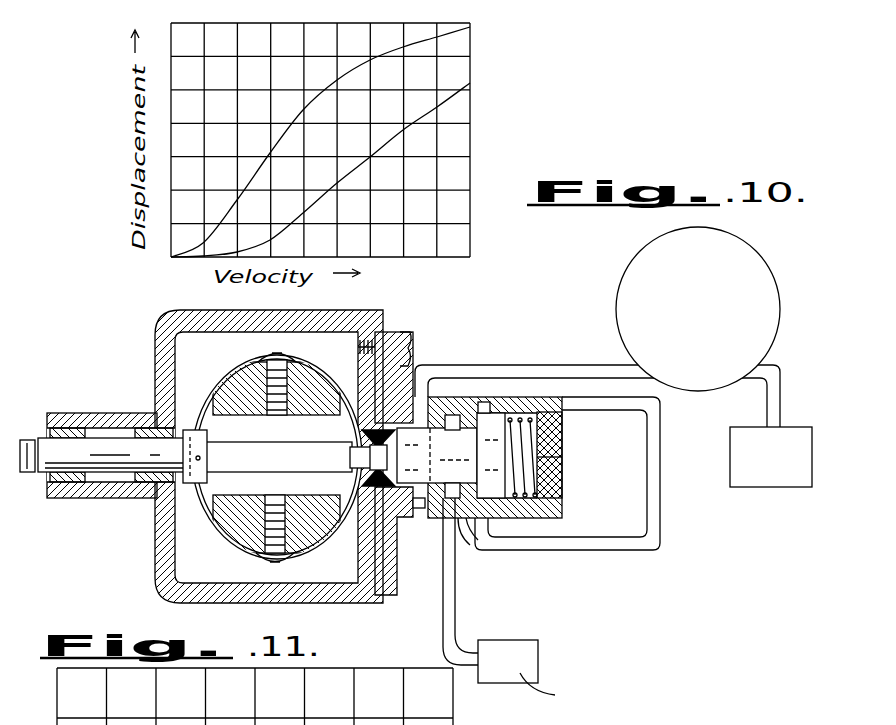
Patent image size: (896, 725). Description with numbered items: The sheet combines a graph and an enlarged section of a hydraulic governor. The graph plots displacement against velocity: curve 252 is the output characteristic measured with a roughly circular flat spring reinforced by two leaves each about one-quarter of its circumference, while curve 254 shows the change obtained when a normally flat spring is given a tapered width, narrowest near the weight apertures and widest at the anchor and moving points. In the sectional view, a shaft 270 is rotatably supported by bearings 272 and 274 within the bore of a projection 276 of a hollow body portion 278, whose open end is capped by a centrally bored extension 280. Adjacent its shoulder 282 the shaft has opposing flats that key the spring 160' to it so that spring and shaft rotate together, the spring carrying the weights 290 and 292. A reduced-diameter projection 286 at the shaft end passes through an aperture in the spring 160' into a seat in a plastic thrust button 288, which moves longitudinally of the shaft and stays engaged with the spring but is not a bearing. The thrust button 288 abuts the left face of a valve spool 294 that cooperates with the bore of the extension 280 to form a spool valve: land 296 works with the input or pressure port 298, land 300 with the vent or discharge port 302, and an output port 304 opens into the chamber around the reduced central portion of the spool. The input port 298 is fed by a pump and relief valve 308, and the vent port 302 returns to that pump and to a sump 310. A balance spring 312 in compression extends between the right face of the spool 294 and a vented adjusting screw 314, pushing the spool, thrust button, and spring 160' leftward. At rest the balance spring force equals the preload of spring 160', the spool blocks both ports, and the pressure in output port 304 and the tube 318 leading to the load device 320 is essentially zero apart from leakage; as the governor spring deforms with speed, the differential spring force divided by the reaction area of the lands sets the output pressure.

In FIG. 10, the curve 252 is at (352, 175).
In FIG. 10, the curve 254 is at (312, 105).
In FIG. 11, the spring 160' is at (272, 450).
In FIG. 11, the shaft 270 is at (63, 447).
In FIG. 11, the bearing 272 is at (68, 482).
In FIG. 11, the bearing 274 is at (148, 482).
In FIG. 11, the projection 276 is at (95, 487).
In FIG. 11, the hollow body portion 278 is at (297, 318).
In FIG. 11, the extension 280 is at (387, 380).
In FIG. 11, the shoulder 282 is at (188, 468).
In FIG. 11, the reduced-diameter projection 286 is at (367, 458).
In FIG. 11, the thrust button 288 is at (343, 528).
In FIG. 11, the weight 290 is at (333, 358).
In FIG. 11, the weight 292 is at (248, 533).
In FIG. 11, the valve spool 294 is at (463, 520).
In FIG. 11, the land 296 is at (415, 450).
In FIG. 11, the input port 298 is at (420, 508).
In FIG. 11, the land 300 is at (495, 445).
In FIG. 11, the vent port 302 is at (488, 522).
In FIG. 11, the output port 304 is at (445, 505).
In FIG. 11, the pump and relief valve 308 is at (627, 282).
In FIG. 11, the sump 310 is at (780, 487).
In FIG. 11, the balance spring 312 is at (528, 480).
In FIG. 11, the vented adjusting screw 314 is at (555, 467).
In FIG. 11, the tube 318 is at (455, 605).
In FIG. 11, the load device 320 is at (540, 643).